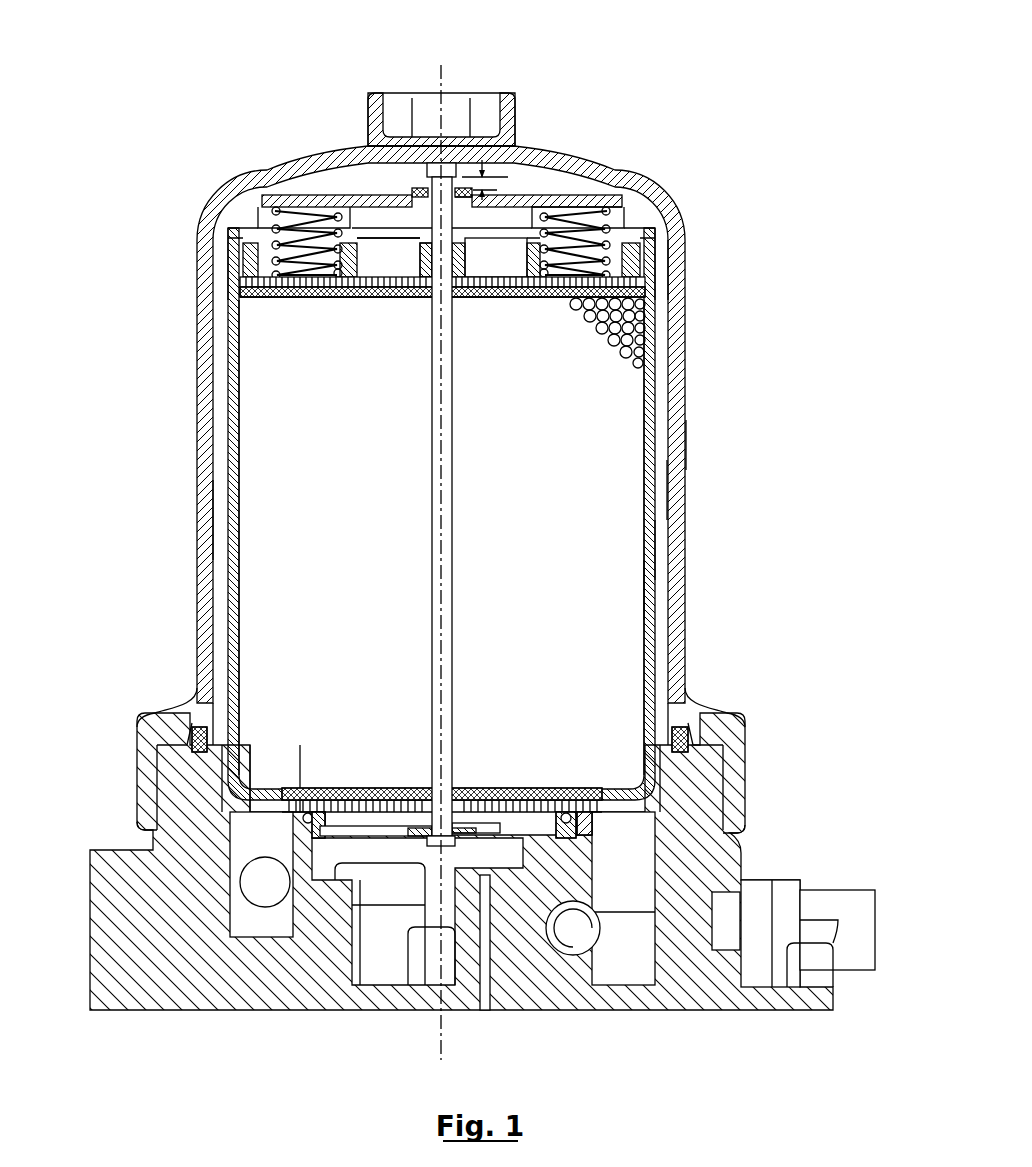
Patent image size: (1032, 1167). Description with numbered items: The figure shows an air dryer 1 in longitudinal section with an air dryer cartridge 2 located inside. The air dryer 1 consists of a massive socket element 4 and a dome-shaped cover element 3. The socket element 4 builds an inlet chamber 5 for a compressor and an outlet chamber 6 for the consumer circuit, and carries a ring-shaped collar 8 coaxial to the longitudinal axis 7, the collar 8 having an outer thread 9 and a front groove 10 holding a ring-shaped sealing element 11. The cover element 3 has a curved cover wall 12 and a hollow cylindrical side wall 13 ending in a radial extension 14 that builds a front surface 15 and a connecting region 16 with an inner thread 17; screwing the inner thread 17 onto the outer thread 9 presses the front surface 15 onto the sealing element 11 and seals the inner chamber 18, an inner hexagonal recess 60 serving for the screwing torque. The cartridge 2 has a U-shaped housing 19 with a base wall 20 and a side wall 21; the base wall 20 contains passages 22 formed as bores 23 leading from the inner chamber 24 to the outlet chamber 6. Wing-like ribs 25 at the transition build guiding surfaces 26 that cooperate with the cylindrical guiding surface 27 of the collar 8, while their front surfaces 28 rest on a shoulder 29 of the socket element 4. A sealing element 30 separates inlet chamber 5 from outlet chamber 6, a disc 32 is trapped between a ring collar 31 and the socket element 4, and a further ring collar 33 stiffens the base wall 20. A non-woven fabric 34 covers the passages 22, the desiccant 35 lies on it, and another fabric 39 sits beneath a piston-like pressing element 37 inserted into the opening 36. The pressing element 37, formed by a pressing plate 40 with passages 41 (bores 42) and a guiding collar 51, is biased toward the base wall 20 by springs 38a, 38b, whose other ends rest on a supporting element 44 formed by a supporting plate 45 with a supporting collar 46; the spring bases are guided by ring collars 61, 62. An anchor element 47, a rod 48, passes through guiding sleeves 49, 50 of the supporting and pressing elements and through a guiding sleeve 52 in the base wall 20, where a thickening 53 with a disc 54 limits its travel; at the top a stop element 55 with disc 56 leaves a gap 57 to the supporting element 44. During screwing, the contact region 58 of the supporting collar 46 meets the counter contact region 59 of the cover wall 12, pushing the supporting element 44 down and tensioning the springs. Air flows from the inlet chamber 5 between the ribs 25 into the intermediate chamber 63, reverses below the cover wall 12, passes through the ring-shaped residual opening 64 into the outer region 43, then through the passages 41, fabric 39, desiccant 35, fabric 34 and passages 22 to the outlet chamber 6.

The air dryer 1 is at (472, 542).
The air dryer cartridge 2 is at (243, 213).
The cover element 3 is at (692, 355).
The socket element 4 is at (198, 1002).
The inlet chamber 5 is at (273, 930).
The outlet chamber 6 is at (487, 975).
The longitudinal axis 7 is at (445, 80).
The collar 8 is at (690, 805).
The outer thread 9 is at (720, 822).
The groove 10 is at (700, 745).
The sealing element 11 is at (705, 700).
The cover wall 12 is at (545, 210).
The side wall 13 is at (677, 490).
The radial extension 14 is at (180, 700).
The front surface 15 is at (187, 729).
The connecting region 16 is at (148, 805).
The inner thread 17 is at (140, 822).
The inner chamber 18 is at (665, 450).
The housing 19 is at (667, 590).
The base wall 20 is at (295, 803).
The side wall 21 is at (650, 545).
The passages 22 is at (442, 760).
The bores 23 is at (372, 788).
The inner chamber 24 is at (536, 668).
The ribs 25 is at (230, 812).
The guiding surfaces 26 is at (217, 773).
The guiding surface 27 is at (228, 797).
The front surfaces 28 is at (650, 815).
The shoulder 29 is at (600, 805).
The sealing element 30 is at (567, 812).
The ring collar 31 is at (322, 822).
The disc 32 is at (322, 838).
The ring collar 33 is at (277, 823).
The non-woven fabric 34 is at (490, 788).
The desiccant 35 is at (615, 330).
The opening 36 is at (680, 200).
The pressing element 37 is at (540, 292).
The spring 38a is at (237, 228).
The spring 38b is at (650, 228).
The non-woven fabric 39 is at (388, 283).
The pressing plate 40 is at (388, 244).
The passages 41 is at (442, 330).
The bores 42 is at (330, 300).
The outer region 43 is at (478, 265).
The supporting element 44 is at (442, 122).
The supporting plate 45 is at (372, 200).
The supporting collar 46 is at (590, 205).
The anchor element 47 is at (500, 550).
The rod 48 is at (455, 568).
The guiding sleeve 49 is at (465, 200).
The guiding sleeve 50 is at (425, 255).
The guiding collar 51 is at (655, 265).
The guiding sleeve 52 is at (470, 821).
The thickening 53 is at (455, 842).
The disc 54 is at (418, 833).
The stop element 55 is at (437, 165).
The disc 56 is at (418, 199).
The gap 57 is at (468, 195).
The contact region 58 is at (330, 196).
The counter contact region 59 is at (296, 210).
The inner hexagonal recess 60 is at (384, 98).
The ring collar 61 is at (605, 215).
The ring collar 62 is at (632, 240).
The intermediate chamber 63 is at (220, 525).
The residual opening 64 is at (232, 222).